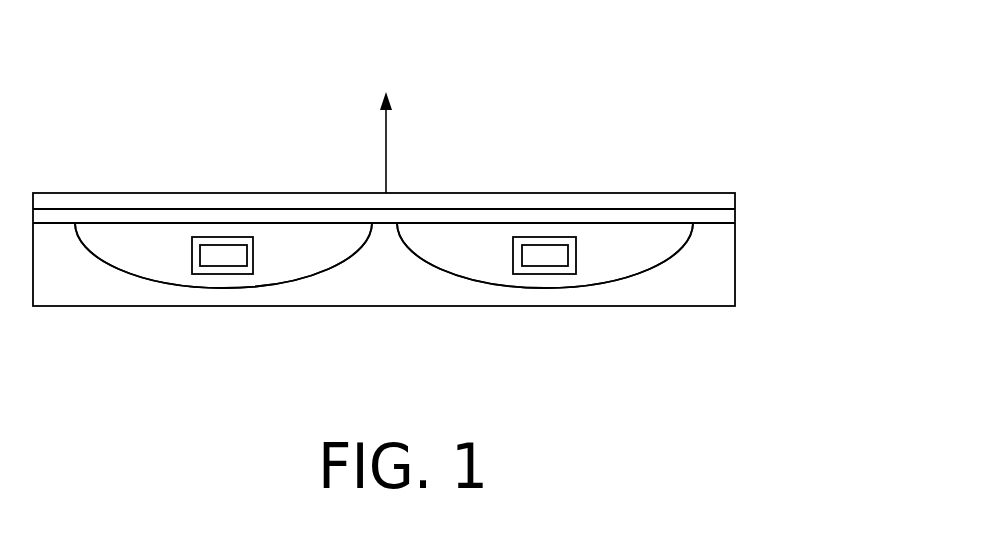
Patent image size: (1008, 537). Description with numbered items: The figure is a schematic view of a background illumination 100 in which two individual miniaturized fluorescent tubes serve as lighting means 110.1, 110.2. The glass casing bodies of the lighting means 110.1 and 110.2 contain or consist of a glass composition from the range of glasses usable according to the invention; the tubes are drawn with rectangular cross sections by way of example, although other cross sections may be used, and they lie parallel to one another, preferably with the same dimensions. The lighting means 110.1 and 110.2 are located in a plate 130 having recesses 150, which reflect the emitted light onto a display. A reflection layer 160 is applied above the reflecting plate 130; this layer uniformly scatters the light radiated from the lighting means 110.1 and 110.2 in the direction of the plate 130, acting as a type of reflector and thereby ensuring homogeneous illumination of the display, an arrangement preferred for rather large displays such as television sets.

The background illumination 100 is at (568, 105).
The lighting means 110.1 is at (180, 280).
The lighting means 110.2 is at (594, 279).
The plate 130 is at (385, 282).
The recesses 150 is at (310, 286).
The reflection layer 160 is at (634, 288).